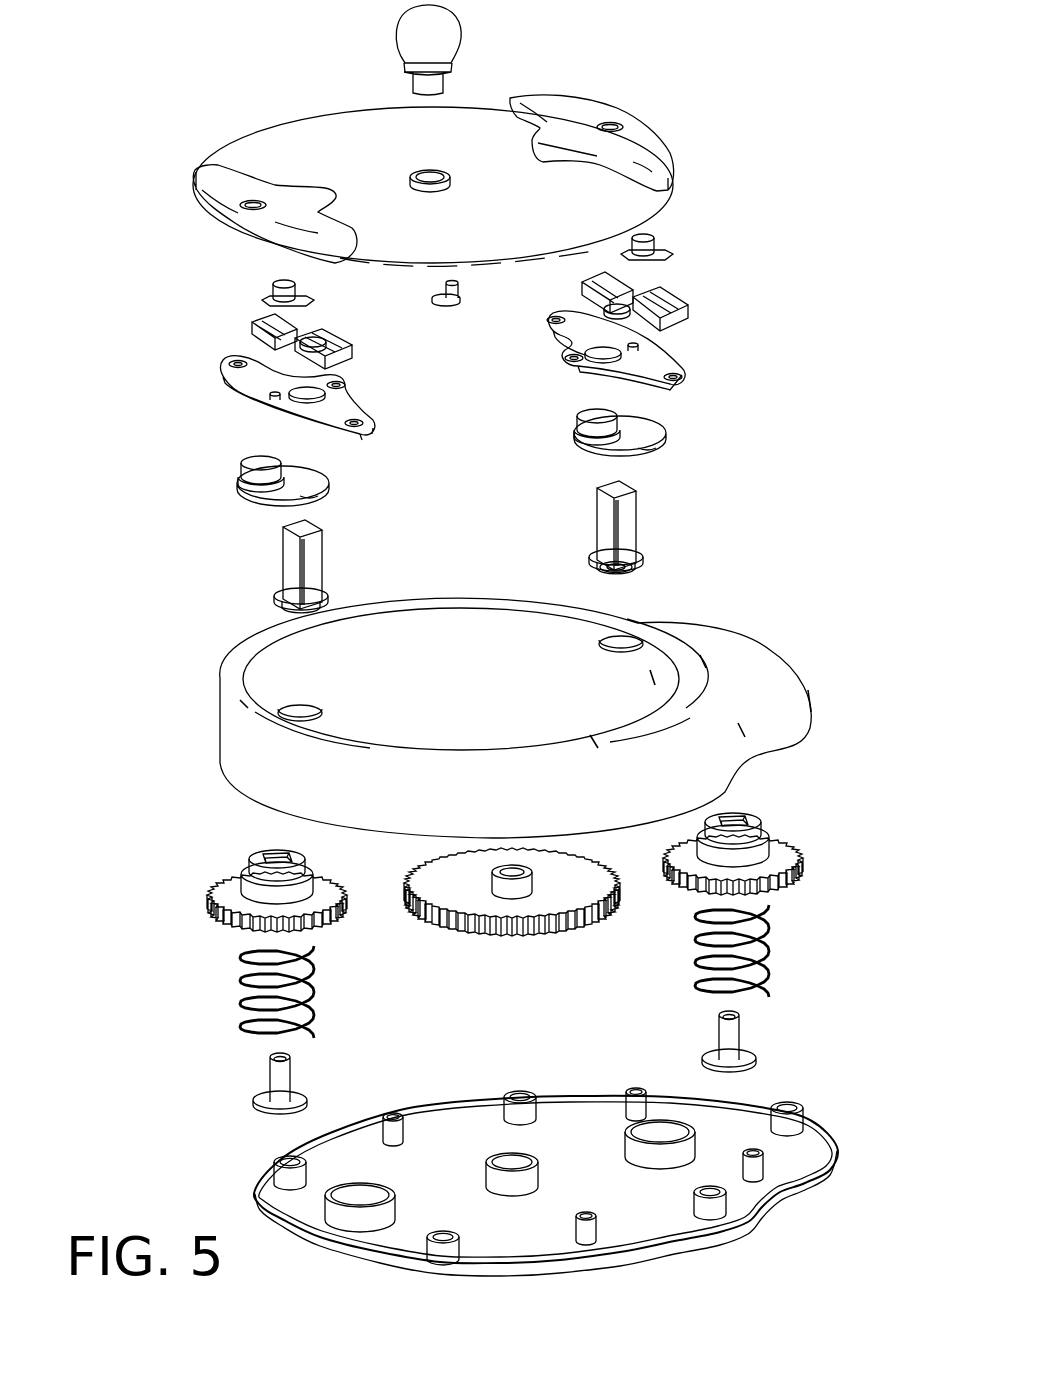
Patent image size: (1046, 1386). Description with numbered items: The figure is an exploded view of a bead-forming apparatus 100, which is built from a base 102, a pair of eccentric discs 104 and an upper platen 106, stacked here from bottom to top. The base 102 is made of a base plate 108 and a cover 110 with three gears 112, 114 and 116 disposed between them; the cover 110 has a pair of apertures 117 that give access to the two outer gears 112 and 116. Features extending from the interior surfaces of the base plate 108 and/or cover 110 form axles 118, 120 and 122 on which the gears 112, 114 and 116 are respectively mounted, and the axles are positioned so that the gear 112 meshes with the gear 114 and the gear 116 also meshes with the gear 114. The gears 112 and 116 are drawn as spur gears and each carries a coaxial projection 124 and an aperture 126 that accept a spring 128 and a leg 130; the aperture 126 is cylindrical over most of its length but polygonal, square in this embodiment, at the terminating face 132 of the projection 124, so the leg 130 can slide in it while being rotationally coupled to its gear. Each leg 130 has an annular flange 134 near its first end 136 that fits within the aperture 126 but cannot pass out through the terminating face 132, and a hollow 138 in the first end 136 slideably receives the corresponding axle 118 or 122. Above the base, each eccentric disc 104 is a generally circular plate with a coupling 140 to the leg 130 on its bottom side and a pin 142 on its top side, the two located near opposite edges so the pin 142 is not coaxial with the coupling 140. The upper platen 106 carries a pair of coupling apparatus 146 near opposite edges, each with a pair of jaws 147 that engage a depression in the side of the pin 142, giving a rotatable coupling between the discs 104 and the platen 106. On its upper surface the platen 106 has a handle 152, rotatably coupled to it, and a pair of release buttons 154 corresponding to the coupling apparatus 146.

The apparatus 100 is at (133, 100).
The base 102 is at (765, 648).
The eccentric discs 104 is at (308, 468).
The upper platen 106 is at (270, 128).
The base plate 108 is at (274, 1195).
The cover 110 is at (448, 618).
The gear 112 is at (208, 895).
The gear 114 is at (602, 920).
The gear 116 is at (804, 855).
The apertures 117 is at (322, 708).
The axle 118 is at (273, 1073).
The axle 120 is at (490, 1179).
The axle 122 is at (746, 1032).
The projection 124 is at (250, 860).
The aperture 126 is at (291, 856).
The spring 128 is at (316, 988).
The leg 130 is at (316, 553).
The terminating face 132 is at (262, 853).
The annular flange 134 is at (278, 598).
The first end 136 is at (288, 612).
The hollow 138 is at (620, 572).
The coupling 140 is at (311, 498).
The pin 142 is at (258, 461).
The coupling apparatus 146 is at (211, 168).
The jaws 147 is at (339, 346).
The handle 152 is at (401, 28).
The release buttons 154 is at (284, 283).